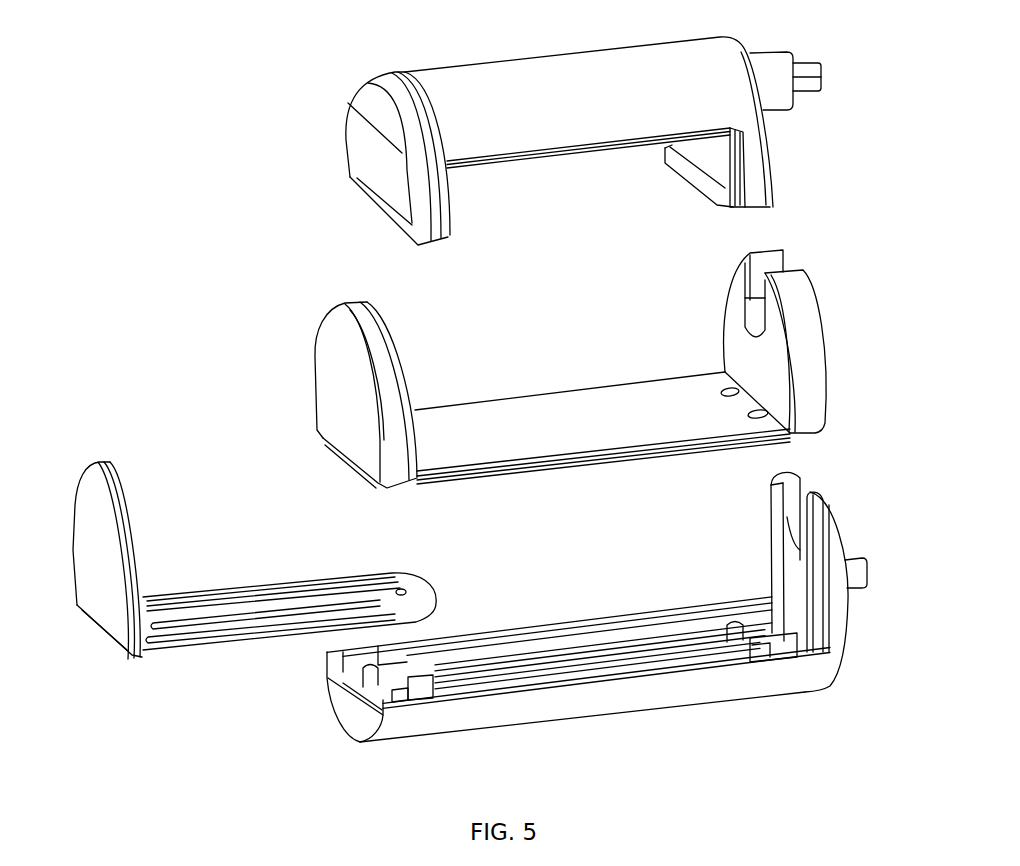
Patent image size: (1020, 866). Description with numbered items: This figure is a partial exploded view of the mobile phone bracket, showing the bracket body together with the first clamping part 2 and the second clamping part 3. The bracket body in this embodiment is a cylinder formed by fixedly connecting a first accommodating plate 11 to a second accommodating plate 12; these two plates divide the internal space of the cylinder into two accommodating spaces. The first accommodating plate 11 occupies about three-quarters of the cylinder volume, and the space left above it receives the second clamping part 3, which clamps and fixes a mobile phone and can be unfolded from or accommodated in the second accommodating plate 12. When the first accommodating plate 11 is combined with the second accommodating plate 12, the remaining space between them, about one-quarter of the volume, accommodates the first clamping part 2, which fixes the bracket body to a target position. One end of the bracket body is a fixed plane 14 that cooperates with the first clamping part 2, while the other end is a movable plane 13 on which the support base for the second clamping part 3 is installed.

The first clamping part 2 is at (169, 514).
The second clamping part 3 is at (468, 83).
The first accommodating plate 11 is at (603, 697).
The second accommodating plate 12 is at (545, 437).
The movable plane 13 is at (843, 532).
The fixed plane 14 is at (337, 378).